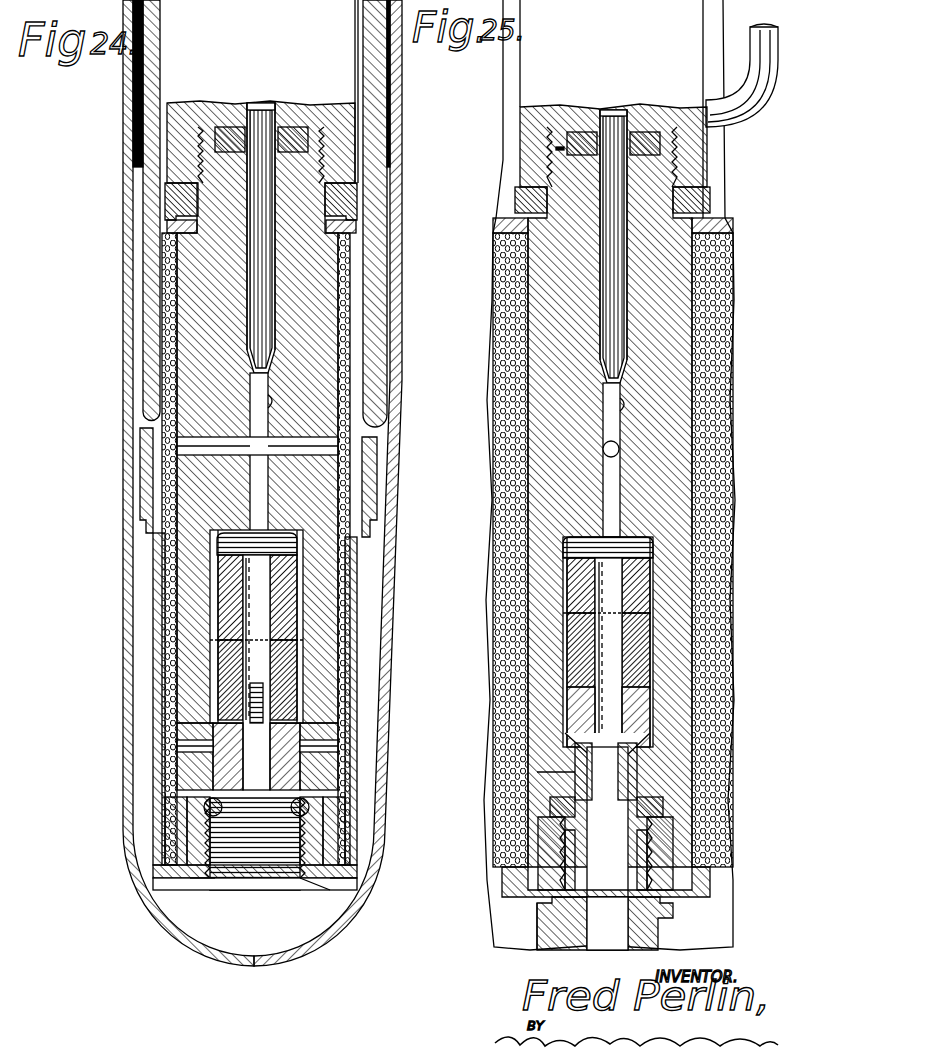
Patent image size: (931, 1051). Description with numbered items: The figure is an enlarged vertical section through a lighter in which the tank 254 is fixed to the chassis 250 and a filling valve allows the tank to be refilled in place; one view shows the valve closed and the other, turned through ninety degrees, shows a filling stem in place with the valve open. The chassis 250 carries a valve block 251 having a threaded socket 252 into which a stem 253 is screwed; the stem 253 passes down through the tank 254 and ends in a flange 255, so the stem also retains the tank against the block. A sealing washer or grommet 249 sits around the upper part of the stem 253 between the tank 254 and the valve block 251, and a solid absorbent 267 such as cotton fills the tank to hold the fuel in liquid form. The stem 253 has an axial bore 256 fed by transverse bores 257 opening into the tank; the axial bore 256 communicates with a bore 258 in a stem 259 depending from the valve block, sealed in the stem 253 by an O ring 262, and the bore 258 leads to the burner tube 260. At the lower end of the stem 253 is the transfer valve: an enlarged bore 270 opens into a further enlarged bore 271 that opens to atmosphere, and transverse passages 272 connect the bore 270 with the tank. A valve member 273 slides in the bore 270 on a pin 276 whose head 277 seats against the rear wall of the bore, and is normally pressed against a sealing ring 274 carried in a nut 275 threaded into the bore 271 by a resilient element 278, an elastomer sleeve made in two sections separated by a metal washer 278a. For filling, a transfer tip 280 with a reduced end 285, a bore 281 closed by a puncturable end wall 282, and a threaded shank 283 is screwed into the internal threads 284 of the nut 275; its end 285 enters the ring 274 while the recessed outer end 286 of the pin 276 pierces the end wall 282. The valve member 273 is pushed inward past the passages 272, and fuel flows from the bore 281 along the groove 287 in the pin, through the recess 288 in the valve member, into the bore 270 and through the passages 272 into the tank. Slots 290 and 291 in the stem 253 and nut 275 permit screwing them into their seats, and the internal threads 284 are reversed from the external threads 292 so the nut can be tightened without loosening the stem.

In FIG. 24, the sealing washer or grommet 249 is at (360, 197).
In FIG. 25, the sealing washer or grommet 249 is at (520, 202).
In FIG. 24, the chassis 250 is at (380, 223).
In FIG. 25, the chassis 250 is at (579, 215).
In FIG. 24, the valve block 251 is at (180, 113).
In FIG. 25, the valve block 251 is at (712, 172).
In FIG. 24, the threaded socket 252 is at (313, 133).
In FIG. 25, the threaded socket 252 is at (707, 152).
In FIG. 24, the stem 253 is at (318, 312).
In FIG. 25, the stem 253 is at (670, 350).
In FIG. 24, the tank 254 is at (140, 476).
In FIG. 24, the flange 255 is at (357, 871).
In FIG. 25, the flange 255 is at (710, 883).
In FIG. 24, the axial bore 256 is at (273, 400).
In FIG. 25, the axial bore 256 is at (625, 403).
In FIG. 24, the transverse bores 257 is at (313, 433).
In FIG. 25, the transverse bores 257 is at (618, 455).
In FIG. 24, the bore 258 is at (258, 287).
In FIG. 25, the bore 258 is at (620, 252).
In FIG. 24, the stem 259 is at (248, 262).
In FIG. 25, the stem 259 is at (632, 278).
In FIG. 25, the burner tube 260 is at (766, 106).
In FIG. 25, the O ring 262 is at (560, 150).
In FIG. 24, the solid absorbent 267 is at (170, 340).
In FIG. 25, the solid absorbent 267 is at (712, 290).
In FIG. 24, the enlarged bore 270 is at (295, 645).
In FIG. 25, the enlarged bore 270 is at (655, 650).
In FIG. 24, the further enlarged bore 271 is at (330, 822).
In FIG. 25, the further enlarged bore 271 is at (665, 912).
In FIG. 24, the transverse passages 272 is at (200, 747).
In FIG. 25, the transverse passages 272 is at (585, 770).
In FIG. 24, the valve member 273 is at (305, 745).
In FIG. 25, the valve member 273 is at (570, 692).
In FIG. 24, the sealing ring 274 is at (197, 808).
In FIG. 25, the sealing ring 274 is at (560, 806).
In FIG. 24, the nut 275 is at (200, 880).
In FIG. 25, the nut 275 is at (665, 857).
In FIG. 24, the pin 276 is at (262, 620).
In FIG. 25, the pin 276 is at (610, 637).
In FIG. 24, the head 277 is at (222, 540).
In FIG. 25, the head 277 is at (645, 545).
In FIG. 24, the resilient element 278 is at (225, 600).
In FIG. 25, the resilient element 278 is at (650, 585).
In FIG. 24, the metal washer 278a is at (213, 640).
In FIG. 25, the metal washer 278a is at (565, 613).
In FIG. 25, the transfer tip 280 is at (535, 930).
In FIG. 25, the bore 281 is at (550, 856).
In FIG. 25, the puncturable end wall 282 is at (587, 733).
In FIG. 25, the threaded shank 283 is at (655, 812).
In FIG. 24, the internal threads 284 is at (285, 876).
In FIG. 25, the reduced end 285 is at (625, 790).
In FIG. 25, the outer end of pin 286 is at (550, 835).
In FIG. 24, the groove 287 is at (253, 700).
In FIG. 25, the groove 287 is at (700, 690).
In FIG. 24, the recess 288 is at (309, 807).
In FIG. 25, the recess 288 is at (653, 737).
In FIG. 24, the slot 290 is at (340, 888).
In FIG. 24, the slot 291 is at (310, 890).
In FIG. 24, the external threads 292 is at (178, 846).